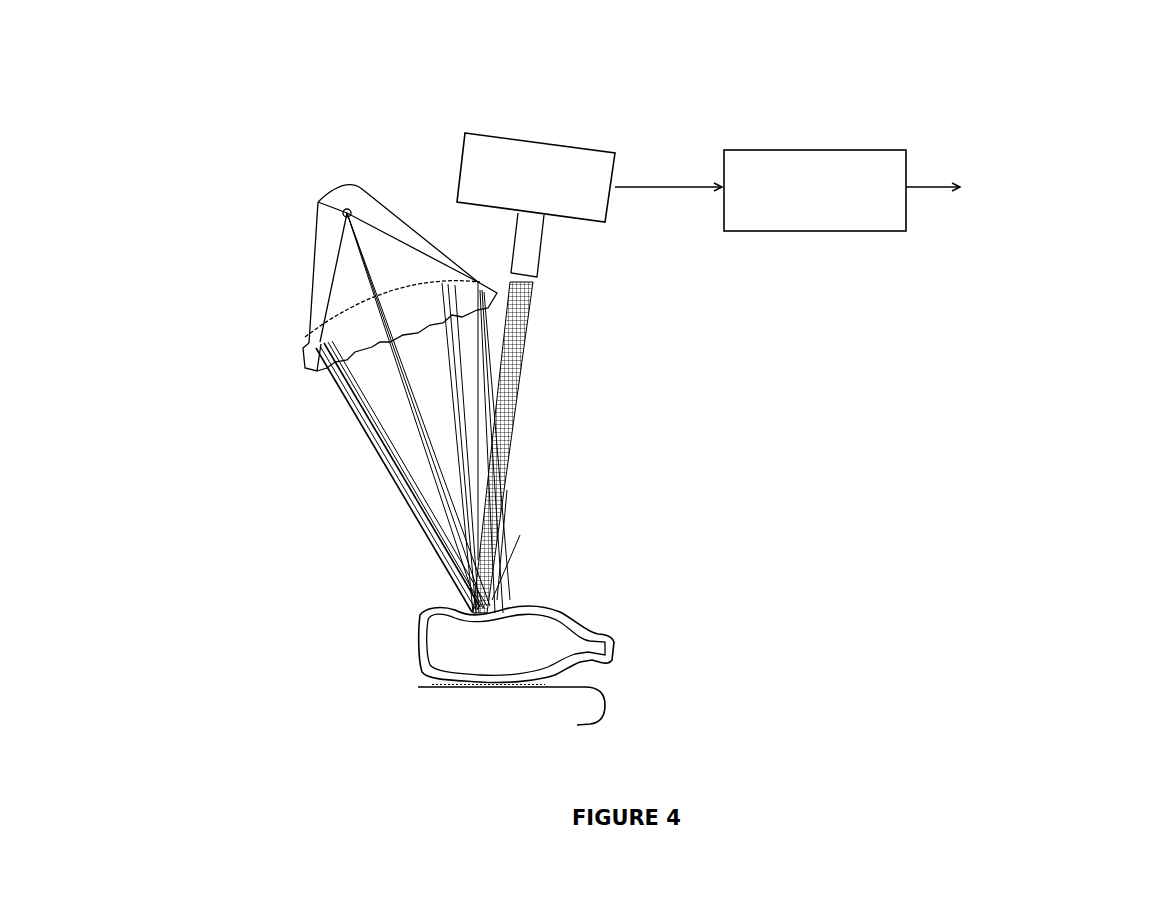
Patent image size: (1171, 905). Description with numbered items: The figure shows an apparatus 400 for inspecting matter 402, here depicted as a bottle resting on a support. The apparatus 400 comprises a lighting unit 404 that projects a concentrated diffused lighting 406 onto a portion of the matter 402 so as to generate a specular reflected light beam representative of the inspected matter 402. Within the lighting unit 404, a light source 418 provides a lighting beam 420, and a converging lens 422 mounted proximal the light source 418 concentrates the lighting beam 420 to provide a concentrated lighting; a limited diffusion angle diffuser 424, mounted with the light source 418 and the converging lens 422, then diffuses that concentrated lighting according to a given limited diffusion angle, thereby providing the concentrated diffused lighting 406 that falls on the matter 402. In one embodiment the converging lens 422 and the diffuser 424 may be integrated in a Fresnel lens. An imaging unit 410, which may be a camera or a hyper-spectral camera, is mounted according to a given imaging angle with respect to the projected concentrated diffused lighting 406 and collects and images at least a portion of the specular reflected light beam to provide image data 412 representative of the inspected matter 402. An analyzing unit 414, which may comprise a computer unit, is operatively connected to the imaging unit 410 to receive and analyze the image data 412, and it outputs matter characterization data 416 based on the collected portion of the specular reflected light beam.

The apparatus for inspecting matter 400 is at (677, 127).
The matter 402 is at (607, 648).
The lighting unit 404 is at (262, 205).
The concentrated diffused lighting 406 is at (370, 512).
The imaging unit 410 is at (452, 157).
The image data 412 is at (668, 240).
The analyzing unit 414 is at (787, 232).
The matter characterization data 416 is at (1034, 244).
The light source 418 is at (345, 209).
The lighting beam 420 is at (355, 247).
The converging lens 422 is at (337, 318).
The limited diffusion angle diffuser 424 is at (352, 392).